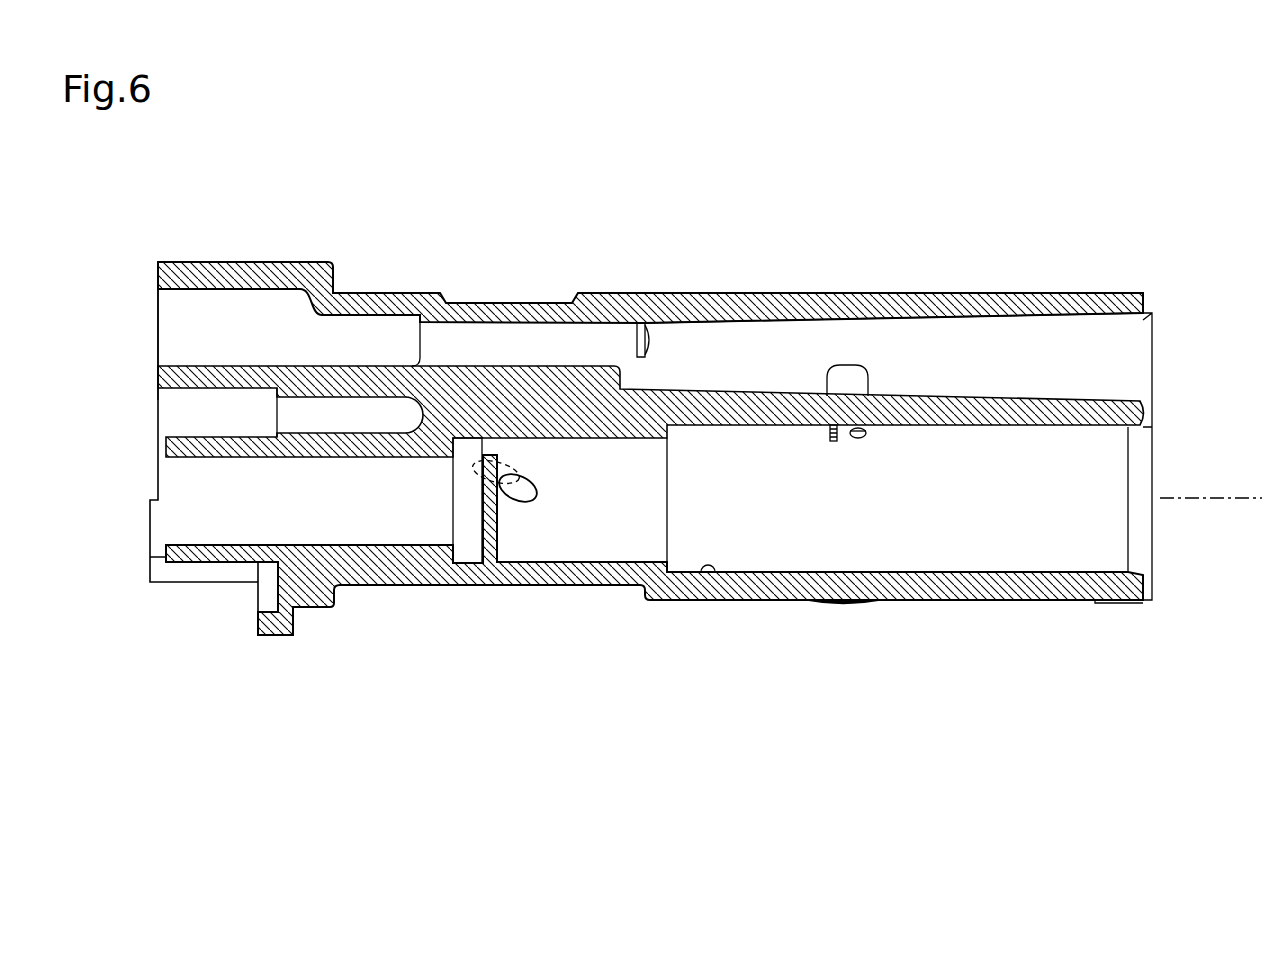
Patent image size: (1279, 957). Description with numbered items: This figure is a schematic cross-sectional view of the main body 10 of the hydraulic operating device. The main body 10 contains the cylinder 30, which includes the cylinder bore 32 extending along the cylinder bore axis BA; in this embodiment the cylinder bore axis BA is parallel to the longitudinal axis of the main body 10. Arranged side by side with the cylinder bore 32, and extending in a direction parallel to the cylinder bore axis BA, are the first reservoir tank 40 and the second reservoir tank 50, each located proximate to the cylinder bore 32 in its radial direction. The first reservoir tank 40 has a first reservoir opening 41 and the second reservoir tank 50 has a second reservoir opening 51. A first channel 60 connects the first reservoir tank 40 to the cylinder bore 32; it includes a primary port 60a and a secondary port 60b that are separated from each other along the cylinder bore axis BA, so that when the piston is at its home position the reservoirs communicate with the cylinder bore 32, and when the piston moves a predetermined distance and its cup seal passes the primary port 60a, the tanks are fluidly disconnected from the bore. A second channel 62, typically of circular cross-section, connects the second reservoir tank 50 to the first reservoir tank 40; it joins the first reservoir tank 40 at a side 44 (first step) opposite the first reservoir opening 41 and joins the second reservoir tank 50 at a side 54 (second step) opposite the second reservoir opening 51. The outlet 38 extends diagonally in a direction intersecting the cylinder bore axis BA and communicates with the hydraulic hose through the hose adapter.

The main body 10 is at (1102, 219).
The cylinder 30 is at (779, 590).
The cylinder bore 32 is at (714, 576).
The outlet 38 is at (537, 488).
The first reservoir tank 40 is at (729, 321).
The first reservoir opening 41 is at (1127, 313).
The side (first step) 44 is at (633, 362).
The second reservoir tank 50 is at (240, 290).
The second reservoir opening 51 is at (175, 290).
The side (second step) 54 is at (412, 315).
The first channel 60 is at (850, 443).
The primary port 60a is at (833, 442).
The secondary port 60b is at (869, 457).
The second channel 62 is at (498, 322).
The cylinder bore axis BA is at (1222, 500).